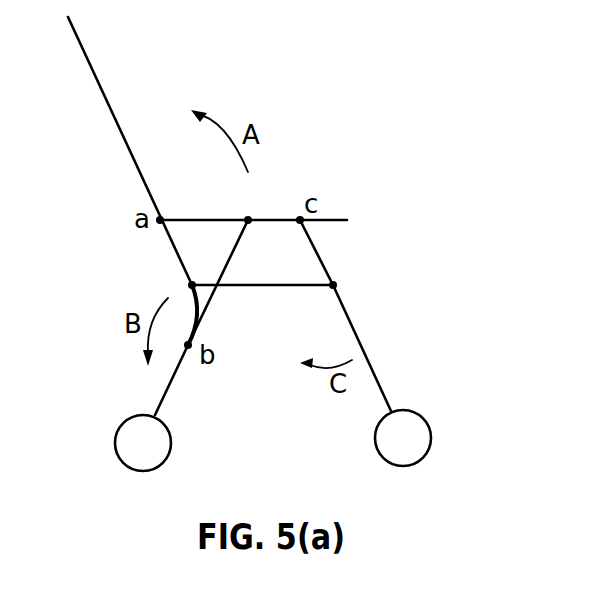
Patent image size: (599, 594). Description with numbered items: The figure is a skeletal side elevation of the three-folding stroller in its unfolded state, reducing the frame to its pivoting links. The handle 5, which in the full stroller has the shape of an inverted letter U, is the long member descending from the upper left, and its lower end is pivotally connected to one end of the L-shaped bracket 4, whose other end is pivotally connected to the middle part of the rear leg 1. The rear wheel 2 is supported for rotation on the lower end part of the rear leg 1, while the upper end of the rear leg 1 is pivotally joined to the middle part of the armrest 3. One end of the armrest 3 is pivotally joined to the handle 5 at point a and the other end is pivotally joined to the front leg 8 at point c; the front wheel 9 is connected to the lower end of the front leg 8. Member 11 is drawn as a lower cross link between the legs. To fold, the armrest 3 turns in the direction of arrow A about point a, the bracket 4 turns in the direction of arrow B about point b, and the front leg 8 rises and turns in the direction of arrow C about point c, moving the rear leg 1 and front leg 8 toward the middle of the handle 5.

The rear leg 1 is at (168, 392).
The rear wheel 2 is at (115, 442).
The armrest 3 is at (277, 218).
The L-shaped bracket 4 is at (190, 318).
The handle 5 is at (98, 78).
The front leg 8 is at (370, 367).
The front wheel 9 is at (431, 444).
The intermediate link 11 is at (268, 287).